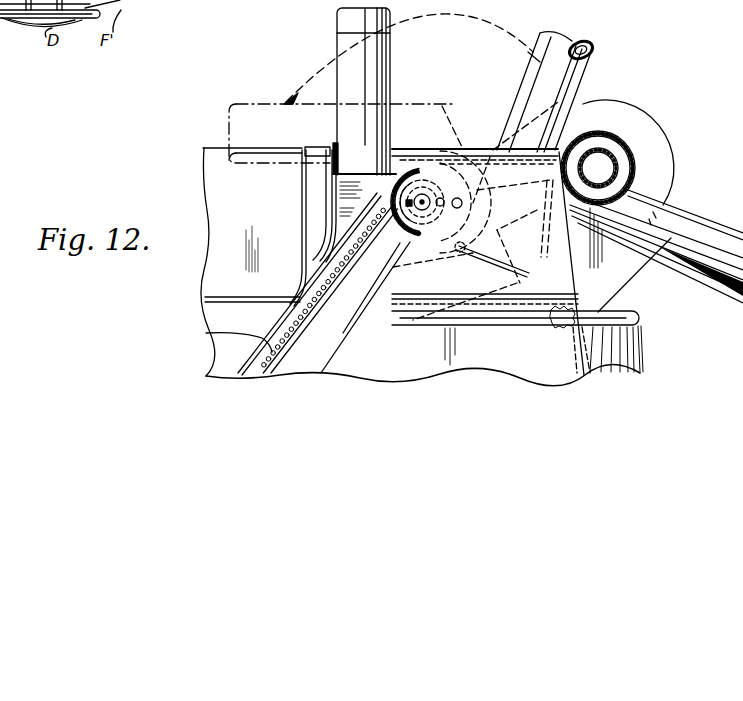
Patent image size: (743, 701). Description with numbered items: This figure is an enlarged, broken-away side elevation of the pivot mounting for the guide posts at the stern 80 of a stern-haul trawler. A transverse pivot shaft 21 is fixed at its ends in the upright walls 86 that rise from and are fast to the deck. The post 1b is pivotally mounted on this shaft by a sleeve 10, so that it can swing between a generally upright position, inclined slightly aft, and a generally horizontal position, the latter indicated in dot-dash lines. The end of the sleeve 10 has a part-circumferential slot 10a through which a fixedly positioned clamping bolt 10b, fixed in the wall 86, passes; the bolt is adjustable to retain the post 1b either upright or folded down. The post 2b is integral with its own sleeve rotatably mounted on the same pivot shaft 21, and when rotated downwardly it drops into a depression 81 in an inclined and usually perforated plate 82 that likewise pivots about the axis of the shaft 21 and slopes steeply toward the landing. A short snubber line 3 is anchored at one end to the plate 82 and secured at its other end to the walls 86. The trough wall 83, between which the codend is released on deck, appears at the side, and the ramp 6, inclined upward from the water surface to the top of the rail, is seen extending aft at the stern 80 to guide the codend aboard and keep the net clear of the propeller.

The post 2b is at (337, 40).
The post 1b is at (248, 104).
The wall 86 is at (312, 148).
The wall 83 is at (218, 180).
The part-circumferential slot 10a is at (407, 197).
The pivot shaft 21 is at (425, 197).
The clamping bolt 10b is at (404, 203).
The sleeve 10 is at (392, 236).
The snubber line 3 is at (212, 332).
The depression 81 is at (380, 347).
The inclined perforated plate 82 is at (299, 318).
The stern 80 is at (633, 341).
The ramp 6 is at (695, 206).